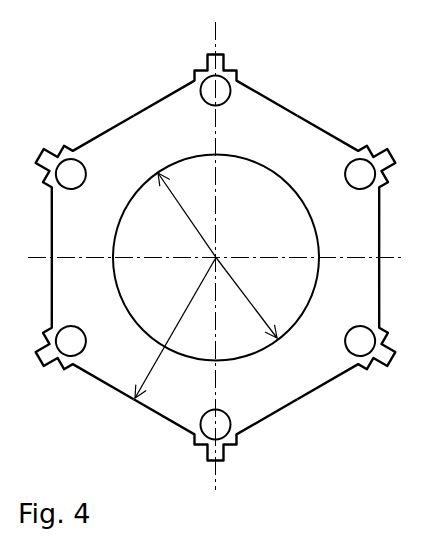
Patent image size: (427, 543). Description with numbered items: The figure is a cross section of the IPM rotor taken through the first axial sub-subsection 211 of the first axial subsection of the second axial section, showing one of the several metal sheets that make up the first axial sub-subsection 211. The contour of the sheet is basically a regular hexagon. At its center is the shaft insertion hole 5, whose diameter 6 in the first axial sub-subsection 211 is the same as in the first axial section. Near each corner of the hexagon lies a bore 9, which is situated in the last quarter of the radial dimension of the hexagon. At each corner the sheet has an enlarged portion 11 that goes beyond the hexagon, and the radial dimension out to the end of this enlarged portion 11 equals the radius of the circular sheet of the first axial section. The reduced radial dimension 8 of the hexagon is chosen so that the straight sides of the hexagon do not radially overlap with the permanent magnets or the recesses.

The first axial sub-subsection 211 is at (213, 252).
The bore 9 is at (220, 88).
The shaft insertion hole 5 is at (269, 236).
The diameter 6 is at (246, 298).
The reduced radial dimension 8 is at (175, 285).
The enlarged portion 11 is at (225, 447).